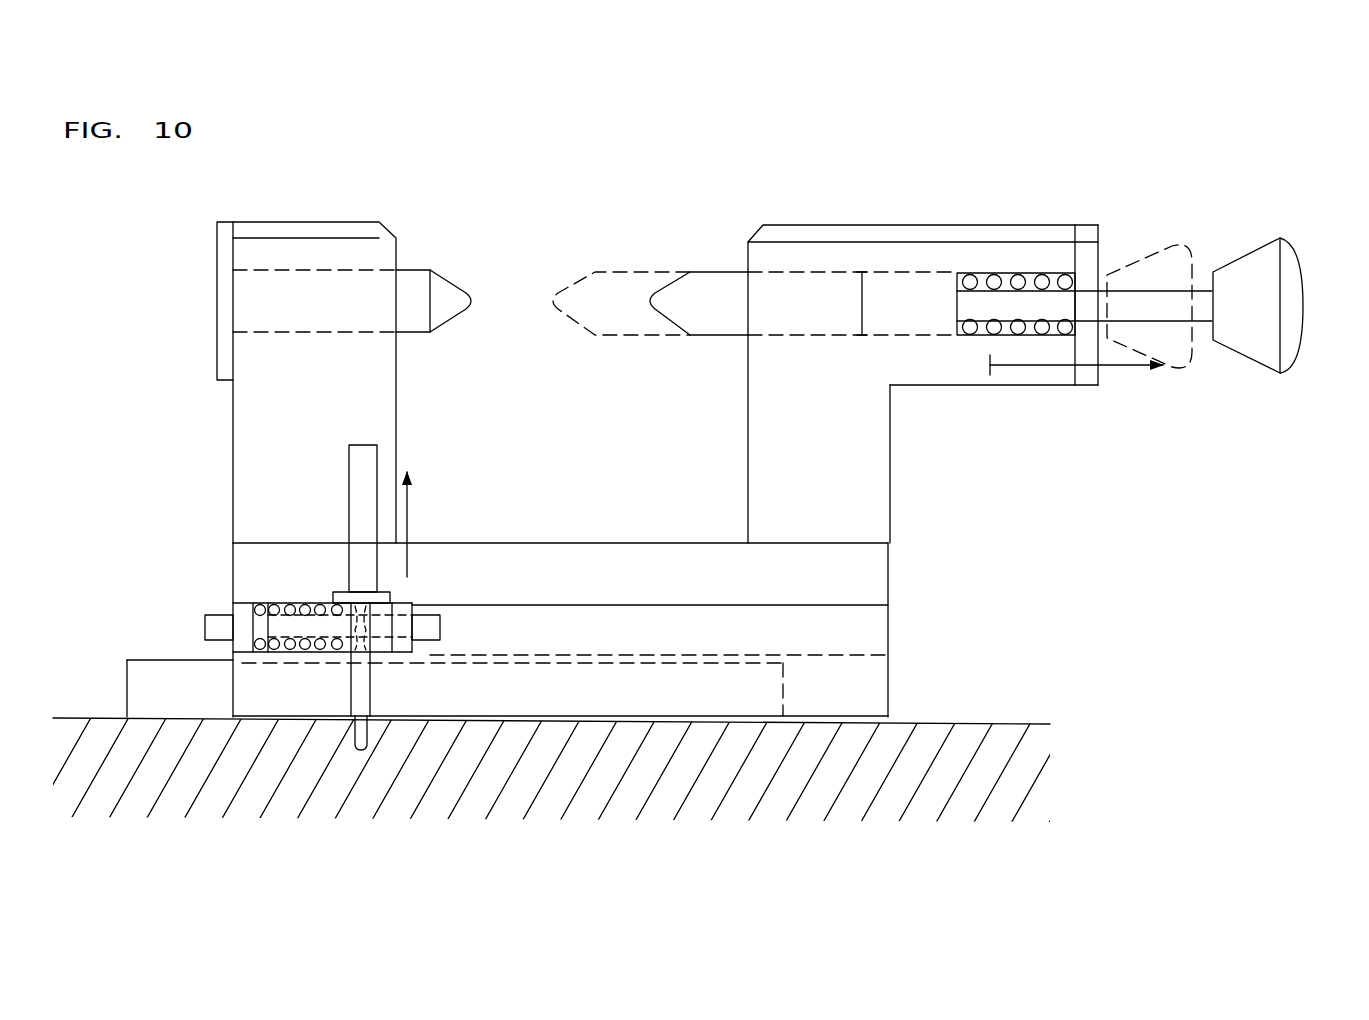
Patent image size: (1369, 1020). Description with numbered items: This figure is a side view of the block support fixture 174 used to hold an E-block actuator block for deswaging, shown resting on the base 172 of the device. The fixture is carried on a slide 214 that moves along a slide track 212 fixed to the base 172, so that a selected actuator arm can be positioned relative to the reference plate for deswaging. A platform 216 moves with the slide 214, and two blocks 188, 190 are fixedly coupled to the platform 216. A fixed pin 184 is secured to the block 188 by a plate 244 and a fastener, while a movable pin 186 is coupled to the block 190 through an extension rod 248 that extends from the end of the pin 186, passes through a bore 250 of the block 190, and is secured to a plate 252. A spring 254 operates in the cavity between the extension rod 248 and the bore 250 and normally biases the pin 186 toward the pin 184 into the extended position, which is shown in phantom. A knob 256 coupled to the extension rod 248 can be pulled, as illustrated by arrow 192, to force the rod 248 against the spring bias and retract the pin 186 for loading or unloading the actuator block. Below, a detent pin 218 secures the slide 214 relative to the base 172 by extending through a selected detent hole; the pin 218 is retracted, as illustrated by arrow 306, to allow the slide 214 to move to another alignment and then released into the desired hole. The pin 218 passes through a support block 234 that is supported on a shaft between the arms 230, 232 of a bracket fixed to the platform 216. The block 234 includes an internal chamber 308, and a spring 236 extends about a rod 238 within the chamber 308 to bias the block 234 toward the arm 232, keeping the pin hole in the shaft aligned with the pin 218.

The base 172 is at (978, 722).
The block support fixture 174 is at (1213, 215).
The pin 184 is at (411, 268).
The pin 186 is at (722, 272).
The block 188 is at (292, 339).
The block 190 is at (951, 306).
The arrow 192 is at (1112, 368).
The slide track 212 is at (722, 702).
The slide 214 is at (562, 627).
The platform 216 is at (797, 588).
The pin 218 is at (370, 462).
The arm 230 is at (242, 612).
The arm 232 is at (407, 610).
The support block 234 is at (283, 645).
The spring 236 is at (277, 605).
The rod 238 is at (435, 627).
The plate 244 is at (217, 258).
The extension rod 248 is at (1130, 290).
The bore 250 is at (922, 273).
The plate 252 is at (1088, 227).
The spring 254 is at (1003, 273).
The knob 256 is at (1280, 237).
The arrow 306 is at (407, 522).
The internal chamber 308 is at (308, 605).